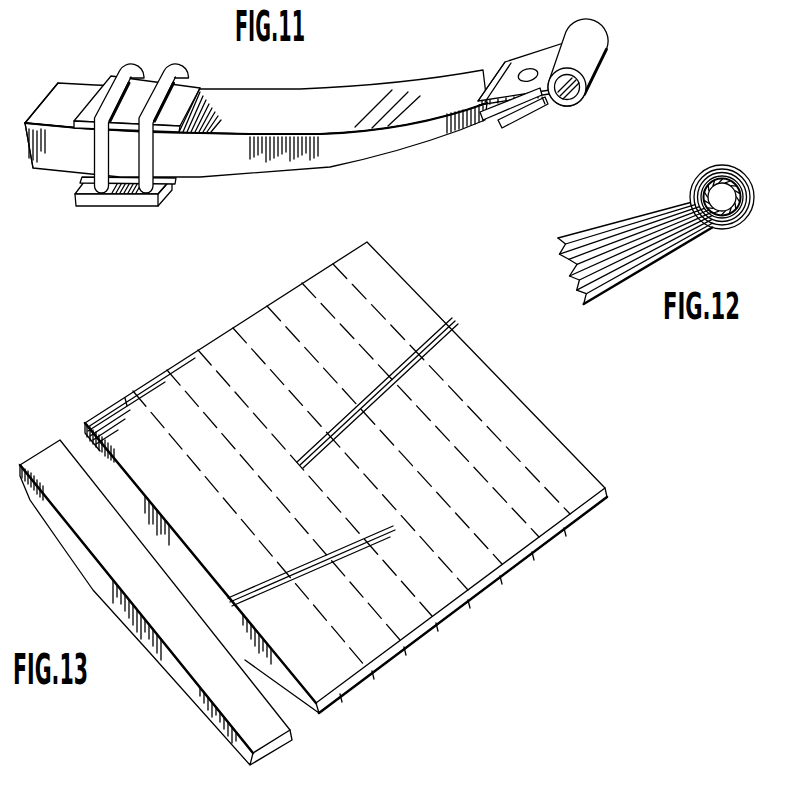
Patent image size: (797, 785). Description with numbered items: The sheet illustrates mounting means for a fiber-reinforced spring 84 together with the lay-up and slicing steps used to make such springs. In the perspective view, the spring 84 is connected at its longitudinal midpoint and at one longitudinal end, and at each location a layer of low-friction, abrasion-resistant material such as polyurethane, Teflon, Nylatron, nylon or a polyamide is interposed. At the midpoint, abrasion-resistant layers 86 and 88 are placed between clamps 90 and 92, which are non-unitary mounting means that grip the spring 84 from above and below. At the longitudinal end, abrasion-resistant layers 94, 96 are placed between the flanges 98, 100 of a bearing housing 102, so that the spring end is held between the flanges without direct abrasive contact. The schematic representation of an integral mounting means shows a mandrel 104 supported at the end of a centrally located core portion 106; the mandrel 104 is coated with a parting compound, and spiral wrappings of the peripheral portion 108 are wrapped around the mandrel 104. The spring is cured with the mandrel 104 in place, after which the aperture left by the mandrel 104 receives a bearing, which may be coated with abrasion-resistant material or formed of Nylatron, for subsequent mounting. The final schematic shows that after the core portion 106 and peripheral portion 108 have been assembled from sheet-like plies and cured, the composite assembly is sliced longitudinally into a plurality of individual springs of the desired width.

In FIG. 11, the fiber-reinforced spring 84 is at (317, 169).
In FIG. 11, the abrasion-resistant layer 86 is at (196, 85).
In FIG. 11, the abrasion-resistant layer 88 is at (173, 184).
In FIG. 11, the clamp 90 is at (147, 76).
In FIG. 11, the clamp 92 is at (128, 203).
In FIG. 11, the abrasion-resistant layer 94 is at (505, 62).
In FIG. 11, the abrasion-resistant layer 96 is at (487, 124).
In FIG. 11, the flange 98 is at (518, 57).
In FIG. 11, the flange 100 is at (519, 120).
In FIG. 11, the bearing housing 102 is at (576, 108).
In FIG. 12, the mandrel 104 is at (733, 208).
In FIG. 12, the core portion 106 is at (633, 238).
In FIG. 12, the peripheral portion 108 is at (725, 162).